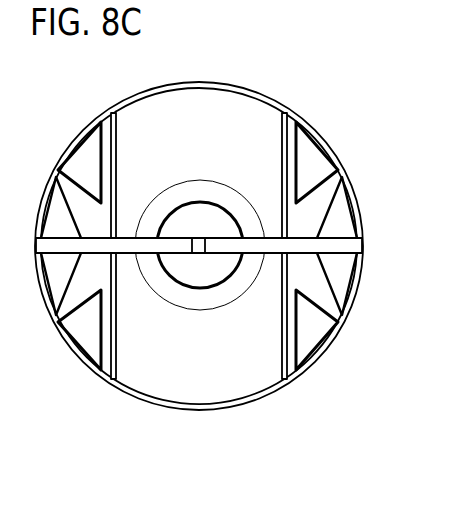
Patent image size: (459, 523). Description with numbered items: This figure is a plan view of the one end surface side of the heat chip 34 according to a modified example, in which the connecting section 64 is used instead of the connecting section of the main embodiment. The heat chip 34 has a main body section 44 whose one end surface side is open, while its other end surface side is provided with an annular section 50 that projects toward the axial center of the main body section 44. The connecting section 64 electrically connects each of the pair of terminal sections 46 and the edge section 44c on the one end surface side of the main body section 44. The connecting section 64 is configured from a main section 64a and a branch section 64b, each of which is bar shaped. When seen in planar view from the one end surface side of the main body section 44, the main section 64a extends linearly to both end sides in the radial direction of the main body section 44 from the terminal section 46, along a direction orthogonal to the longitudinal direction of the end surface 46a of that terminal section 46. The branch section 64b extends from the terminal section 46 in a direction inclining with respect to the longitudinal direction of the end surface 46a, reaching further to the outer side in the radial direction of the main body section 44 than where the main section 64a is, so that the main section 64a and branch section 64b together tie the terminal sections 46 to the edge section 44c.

The heat chip 34 is at (280, 82).
The main body section 44 is at (313, 116).
The edge section 44c is at (122, 103).
The terminal section 46 is at (212, 263).
The end surface 46a is at (146, 240).
The annular section 50 is at (198, 192).
The connecting section 64 is at (159, 290).
The main section 64a is at (127, 274).
The branch section 64b is at (82, 296).